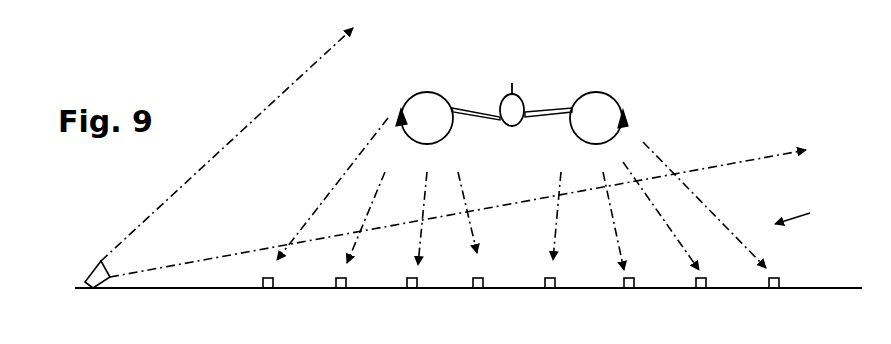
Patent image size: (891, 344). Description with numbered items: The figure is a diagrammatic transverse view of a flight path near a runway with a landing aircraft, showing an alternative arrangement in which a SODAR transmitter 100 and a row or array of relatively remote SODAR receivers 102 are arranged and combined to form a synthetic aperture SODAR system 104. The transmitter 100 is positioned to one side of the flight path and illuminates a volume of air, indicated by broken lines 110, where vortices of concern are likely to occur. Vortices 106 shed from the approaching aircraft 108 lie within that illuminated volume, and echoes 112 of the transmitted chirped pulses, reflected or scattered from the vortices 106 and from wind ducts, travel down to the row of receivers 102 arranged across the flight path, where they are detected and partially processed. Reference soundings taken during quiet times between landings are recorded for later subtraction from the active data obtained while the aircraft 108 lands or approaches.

The SODAR transmitter 100 is at (97, 273).
The SODAR receivers 102 is at (340, 289).
The synthetic aperture SODAR system 104 is at (810, 213).
The vortices 106 is at (414, 95).
The approaching aircraft 108 is at (518, 105).
The broken lines 110 is at (242, 133).
The echoes 112 is at (339, 180).